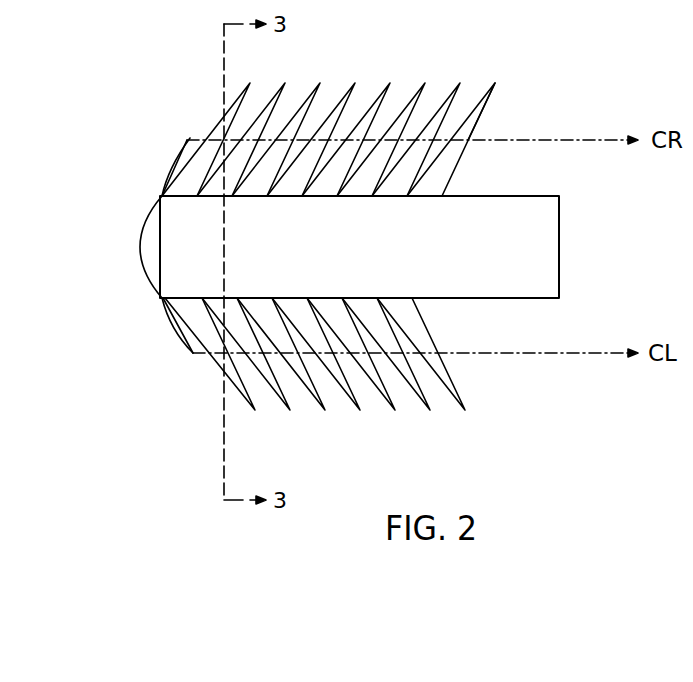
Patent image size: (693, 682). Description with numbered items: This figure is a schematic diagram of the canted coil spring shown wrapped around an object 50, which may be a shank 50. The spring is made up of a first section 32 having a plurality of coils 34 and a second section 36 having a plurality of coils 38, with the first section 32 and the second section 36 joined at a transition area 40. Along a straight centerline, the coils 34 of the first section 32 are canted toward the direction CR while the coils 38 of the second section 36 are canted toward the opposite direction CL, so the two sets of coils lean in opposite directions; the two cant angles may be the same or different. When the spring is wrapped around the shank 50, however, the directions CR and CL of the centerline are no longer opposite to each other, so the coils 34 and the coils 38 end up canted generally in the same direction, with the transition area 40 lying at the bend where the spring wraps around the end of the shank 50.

The first section 32 is at (328, 108).
The coils 34 is at (347, 101).
The second section 36 is at (314, 393).
The coils 38 is at (285, 392).
The transition area 40 is at (126, 248).
The shank 50 is at (548, 247).